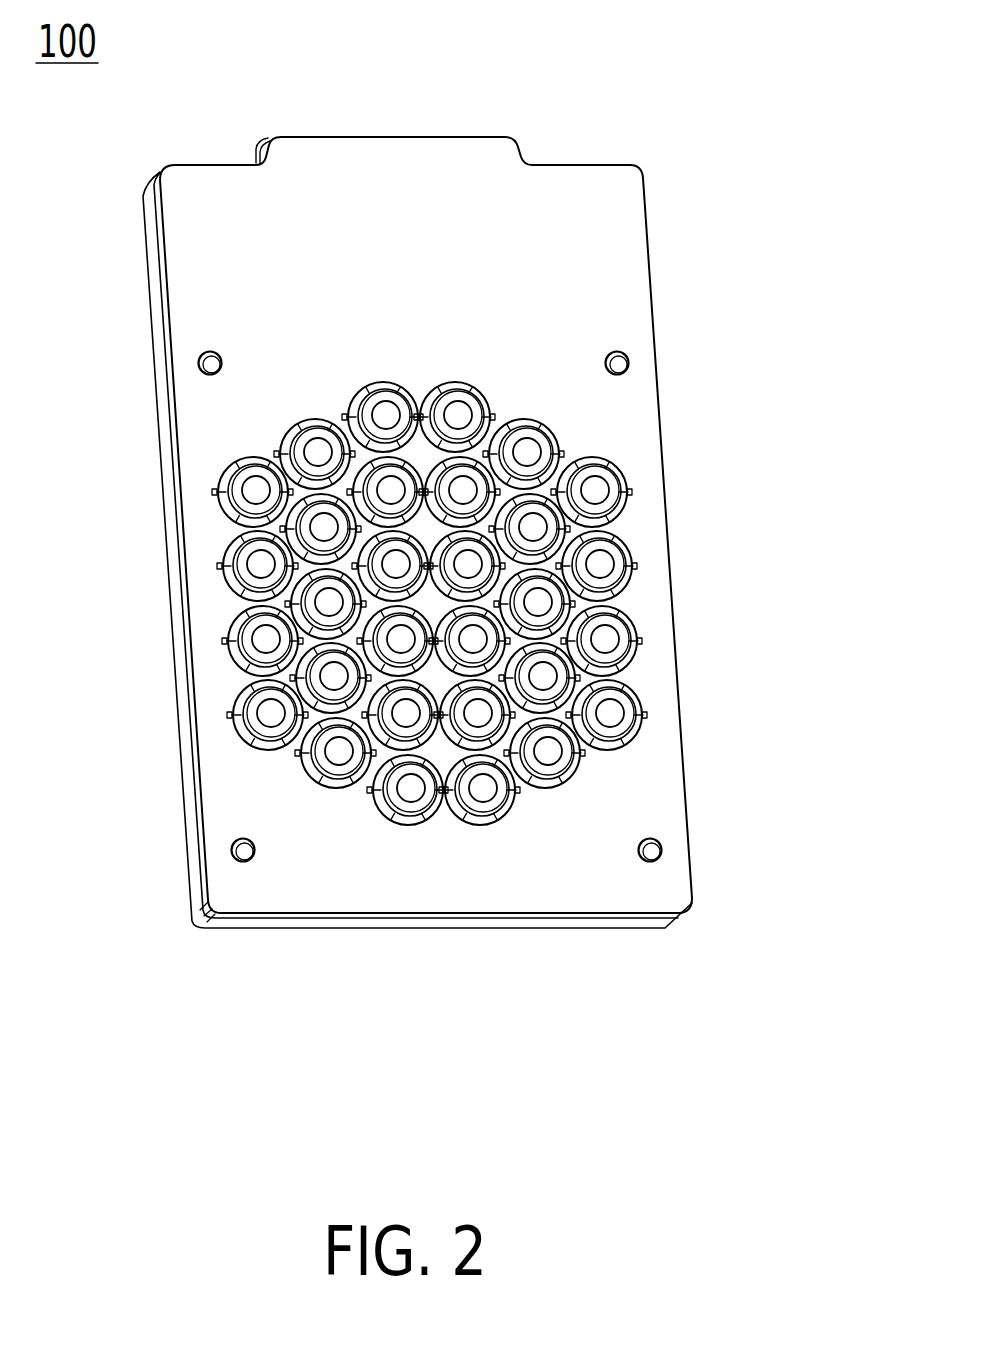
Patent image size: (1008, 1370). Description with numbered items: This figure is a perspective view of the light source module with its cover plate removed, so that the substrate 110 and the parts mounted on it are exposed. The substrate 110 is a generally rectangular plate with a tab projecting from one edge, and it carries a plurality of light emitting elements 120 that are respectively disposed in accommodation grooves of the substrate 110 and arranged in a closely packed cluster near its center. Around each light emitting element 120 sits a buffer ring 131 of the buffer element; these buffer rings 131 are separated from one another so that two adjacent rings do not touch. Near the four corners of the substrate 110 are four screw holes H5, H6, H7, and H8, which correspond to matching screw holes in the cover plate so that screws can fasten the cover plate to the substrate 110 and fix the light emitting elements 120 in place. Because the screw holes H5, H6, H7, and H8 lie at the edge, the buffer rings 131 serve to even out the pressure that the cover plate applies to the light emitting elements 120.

The substrate 110 is at (662, 428).
The light emitting elements 120 is at (548, 603).
The buffer ring 131 is at (625, 512).
The screw hole H5 is at (630, 360).
The screw hole H6 is at (662, 848).
The screw hole H7 is at (220, 857).
The screw hole H8 is at (186, 368).